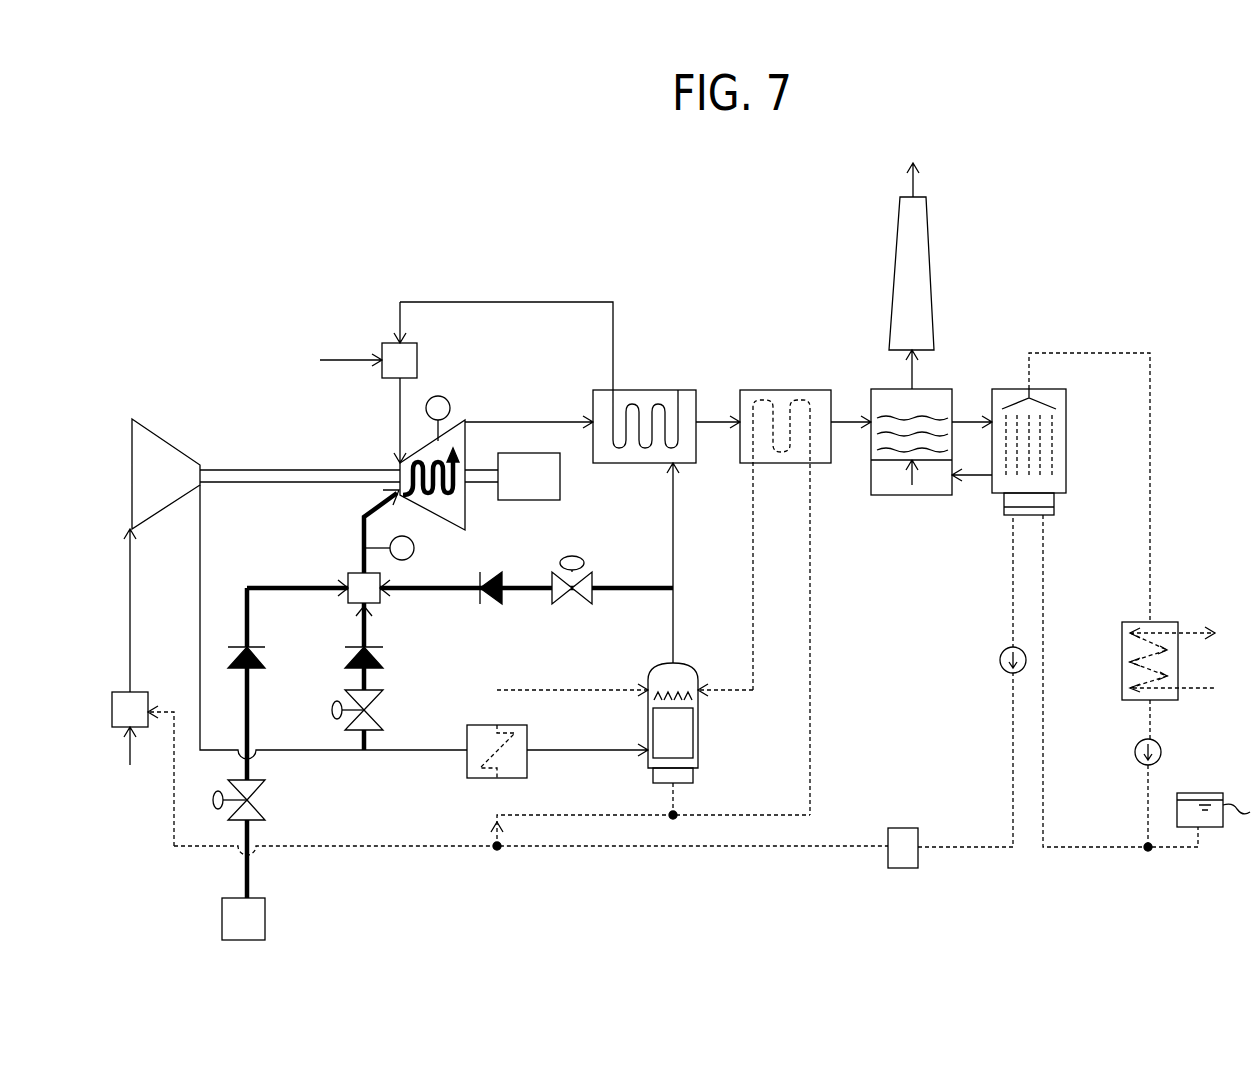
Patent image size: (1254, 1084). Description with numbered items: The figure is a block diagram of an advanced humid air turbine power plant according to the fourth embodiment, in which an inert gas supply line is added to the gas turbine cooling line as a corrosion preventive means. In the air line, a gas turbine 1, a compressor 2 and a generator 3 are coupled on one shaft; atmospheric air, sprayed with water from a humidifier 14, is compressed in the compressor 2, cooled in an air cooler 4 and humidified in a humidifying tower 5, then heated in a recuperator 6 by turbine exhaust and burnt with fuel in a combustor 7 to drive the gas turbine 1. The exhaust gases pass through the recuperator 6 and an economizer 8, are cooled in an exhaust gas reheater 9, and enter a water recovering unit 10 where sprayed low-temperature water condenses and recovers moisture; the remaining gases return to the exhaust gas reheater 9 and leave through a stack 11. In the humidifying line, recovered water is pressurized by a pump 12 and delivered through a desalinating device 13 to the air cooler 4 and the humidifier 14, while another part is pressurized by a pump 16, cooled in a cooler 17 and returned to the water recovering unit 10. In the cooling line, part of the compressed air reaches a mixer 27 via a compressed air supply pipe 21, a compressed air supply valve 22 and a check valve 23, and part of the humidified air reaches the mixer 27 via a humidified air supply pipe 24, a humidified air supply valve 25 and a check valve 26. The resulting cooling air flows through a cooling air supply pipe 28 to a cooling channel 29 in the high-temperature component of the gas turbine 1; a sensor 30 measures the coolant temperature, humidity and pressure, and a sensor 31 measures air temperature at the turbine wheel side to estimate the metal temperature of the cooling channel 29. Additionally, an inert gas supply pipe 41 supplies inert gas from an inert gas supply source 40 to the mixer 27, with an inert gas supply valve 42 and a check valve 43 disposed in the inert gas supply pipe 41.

The gas turbine 1 is at (396, 462).
The compressor 2 is at (163, 421).
The generator 3 is at (560, 480).
The air cooler 4 is at (527, 742).
The humidifying tower 5 is at (698, 730).
The recuperator 6 is at (655, 390).
The combustor 7 is at (417, 358).
The economizer 8 is at (786, 390).
The exhaust gas reheater 9 is at (912, 495).
The water recovering unit 10 is at (1012, 389).
The stack 11 is at (930, 250).
The pump 12 is at (1000, 660).
The desalinating device 13 is at (902, 828).
The humidifier 14 is at (112, 712).
The pump 16 is at (1135, 750).
The cooler 17 is at (1163, 622).
The compressed air supply pipe 21 is at (370, 746).
The compressed air supply valve 22 is at (384, 700).
The check valve 23 is at (384, 656).
The humidified air supply pipe 24 is at (633, 593).
The humidified air supply valve 25 is at (578, 605).
The check valve 26 is at (490, 605).
The mixer 27 is at (380, 604).
The cooling air supply pipe 28 is at (364, 528).
The cooling channel 29 is at (465, 488).
The sensor 30 is at (414, 548).
The sensor 31 is at (448, 400).
The inert gas supply source 40 is at (265, 916).
The inert gas supply pipe 41 is at (250, 868).
The inert gas supply valve 42 is at (266, 798).
The check valve 43 is at (268, 656).